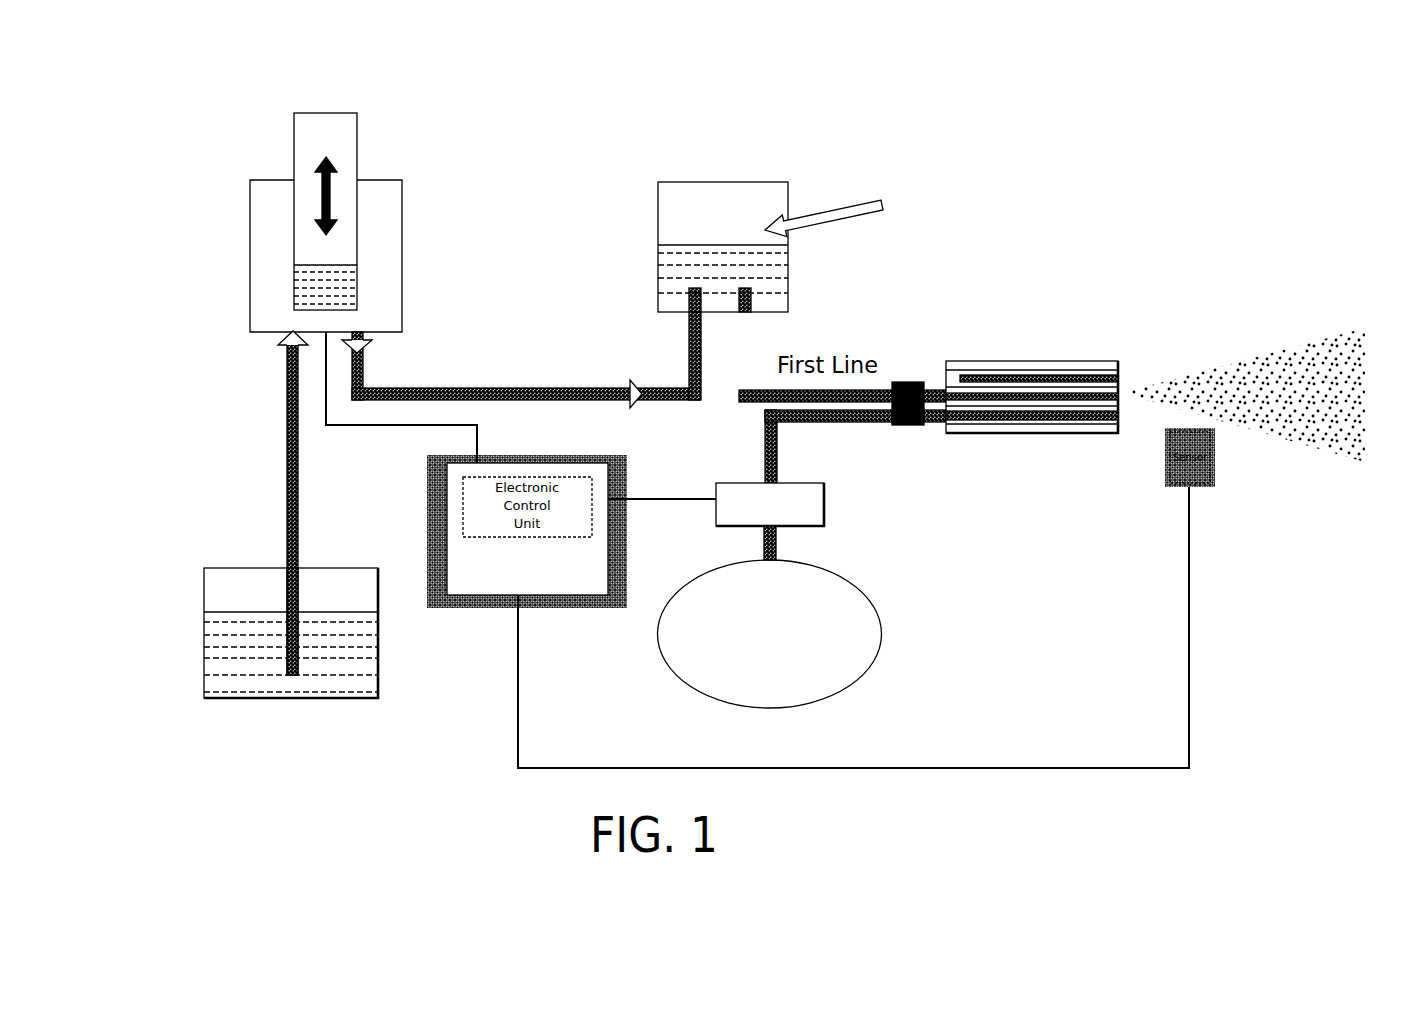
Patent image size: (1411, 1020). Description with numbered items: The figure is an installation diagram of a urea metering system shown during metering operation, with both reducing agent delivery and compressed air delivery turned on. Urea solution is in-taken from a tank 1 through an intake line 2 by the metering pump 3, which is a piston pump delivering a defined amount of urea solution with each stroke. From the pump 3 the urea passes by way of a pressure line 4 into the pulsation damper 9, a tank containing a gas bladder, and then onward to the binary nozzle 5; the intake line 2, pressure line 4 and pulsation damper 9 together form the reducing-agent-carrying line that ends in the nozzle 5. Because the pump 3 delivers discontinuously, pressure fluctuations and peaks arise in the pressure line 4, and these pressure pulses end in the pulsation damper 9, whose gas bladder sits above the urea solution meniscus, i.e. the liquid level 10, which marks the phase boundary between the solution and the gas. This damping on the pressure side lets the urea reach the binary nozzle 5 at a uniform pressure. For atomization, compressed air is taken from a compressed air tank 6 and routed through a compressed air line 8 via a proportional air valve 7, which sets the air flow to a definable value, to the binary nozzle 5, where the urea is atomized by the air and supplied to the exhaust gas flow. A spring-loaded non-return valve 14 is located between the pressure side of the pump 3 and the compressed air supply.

The tank 1 is at (360, 637).
The intake line 2 is at (290, 448).
The metering pump 3 is at (250, 205).
The pressure line 4 is at (522, 397).
The binary nozzle 5 is at (1087, 426).
The compressed air tank 6 is at (848, 660).
The proportional air valve 7 is at (717, 505).
The compressed air line 8 is at (777, 457).
The pulsation damper 9 is at (658, 218).
The liquid level 10 is at (705, 248).
The non-return valve 14 is at (902, 427).